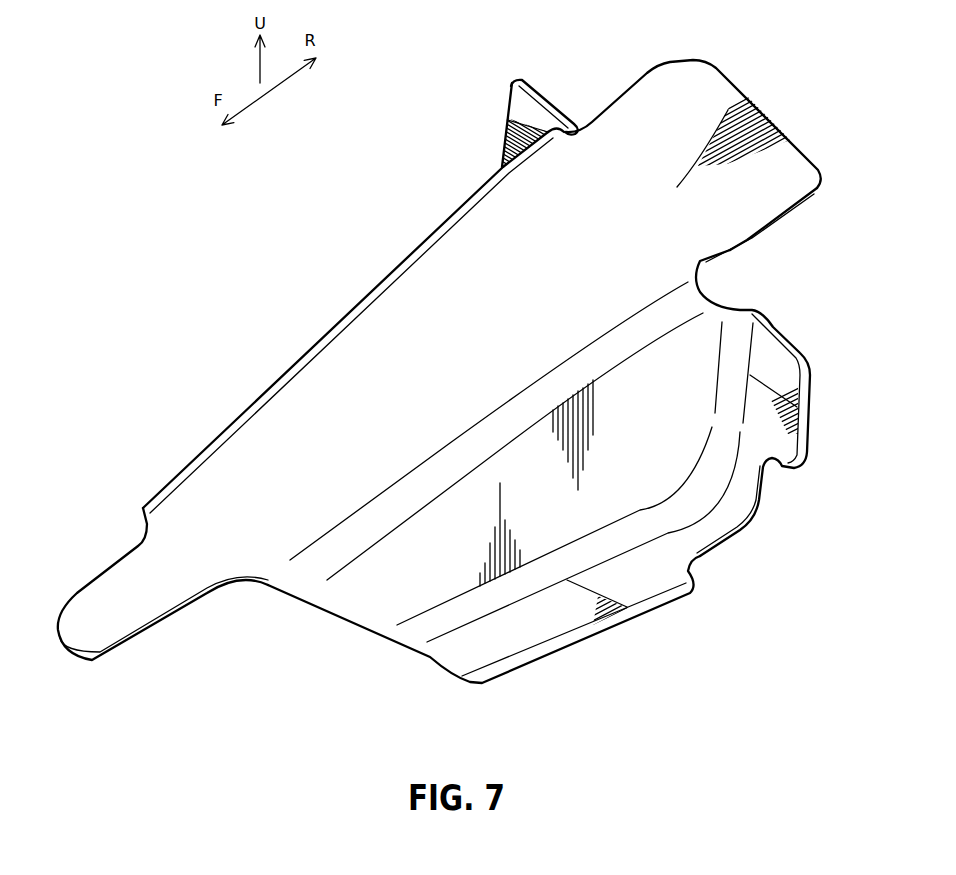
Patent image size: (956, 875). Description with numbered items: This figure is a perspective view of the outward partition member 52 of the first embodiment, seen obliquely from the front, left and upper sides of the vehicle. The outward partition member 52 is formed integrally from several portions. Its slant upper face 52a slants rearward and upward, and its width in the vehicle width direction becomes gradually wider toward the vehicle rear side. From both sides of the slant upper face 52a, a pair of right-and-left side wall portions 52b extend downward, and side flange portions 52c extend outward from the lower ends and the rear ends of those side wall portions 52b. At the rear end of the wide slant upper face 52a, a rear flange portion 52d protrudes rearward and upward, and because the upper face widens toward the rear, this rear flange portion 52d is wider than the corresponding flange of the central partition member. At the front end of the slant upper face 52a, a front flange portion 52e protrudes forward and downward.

The outward partition member 52 is at (197, 241).
The slant upper face 52a is at (333, 365).
The side wall portions 52b is at (360, 603).
The side flange portions 52c is at (520, 113).
The rear flange portion 52d is at (683, 72).
The front flange portion 52e is at (118, 593).